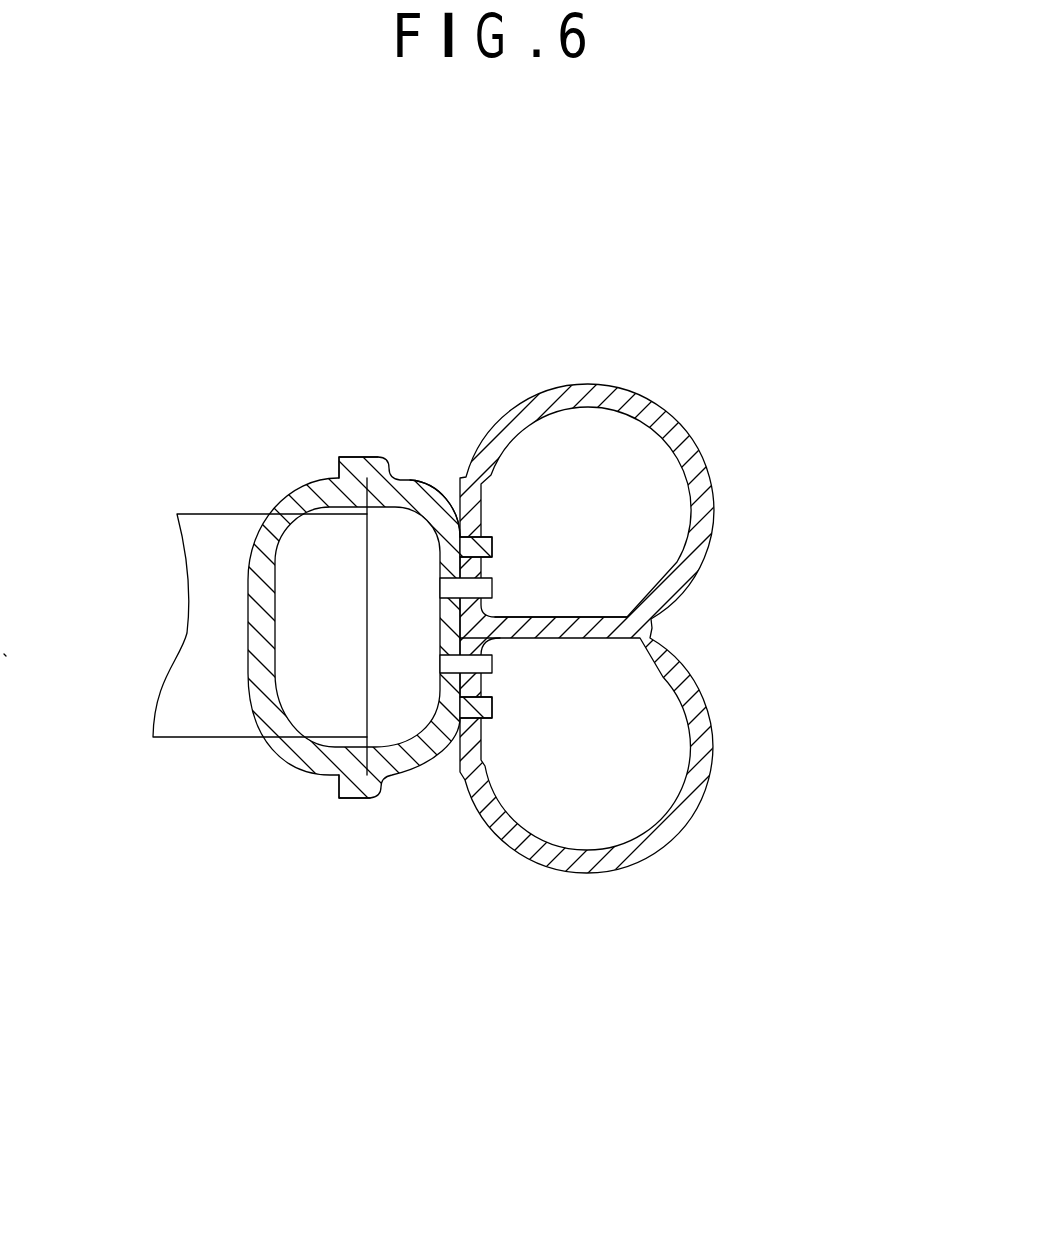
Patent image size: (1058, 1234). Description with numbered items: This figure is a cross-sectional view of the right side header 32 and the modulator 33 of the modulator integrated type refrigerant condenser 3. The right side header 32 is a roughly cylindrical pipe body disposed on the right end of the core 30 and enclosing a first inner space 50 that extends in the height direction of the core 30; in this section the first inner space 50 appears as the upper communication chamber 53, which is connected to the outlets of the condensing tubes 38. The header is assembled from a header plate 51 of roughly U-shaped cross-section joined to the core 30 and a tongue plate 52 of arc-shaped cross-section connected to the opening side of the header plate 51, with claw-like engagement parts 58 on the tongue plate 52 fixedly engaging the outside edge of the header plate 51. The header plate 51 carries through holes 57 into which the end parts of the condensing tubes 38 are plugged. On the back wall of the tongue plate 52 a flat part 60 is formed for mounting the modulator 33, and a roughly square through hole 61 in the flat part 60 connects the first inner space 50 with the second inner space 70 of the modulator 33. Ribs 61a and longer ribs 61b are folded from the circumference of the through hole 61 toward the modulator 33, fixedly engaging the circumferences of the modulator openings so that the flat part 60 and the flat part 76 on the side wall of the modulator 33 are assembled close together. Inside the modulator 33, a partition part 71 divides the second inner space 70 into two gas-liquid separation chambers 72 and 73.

The modulator integrated type refrigerant condenser 3 is at (766, 350).
The core 30 is at (194, 468).
The right side header 32 is at (380, 372).
The modulator 33 is at (668, 364).
The condensing tubes 38 is at (218, 718).
The first inner space 50 is at (422, 980).
The header plate 51 is at (313, 478).
The tongue plate 52 is at (420, 481).
The upper communication chamber 53 is at (403, 722).
The through holes 57 is at (273, 541).
The claw-like engagement parts 58 is at (358, 465).
The flat part 60 is at (427, 745).
The through holes 61 is at (492, 641).
The ribs 61a is at (472, 588).
The ribs 61b is at (490, 537).
The second inner space 70 is at (868, 597).
The partition part 71 is at (565, 635).
The gas-liquid separation chamber 72 is at (667, 543).
The gas-liquid separation chamber 73 is at (652, 707).
The flat part 76 is at (467, 750).